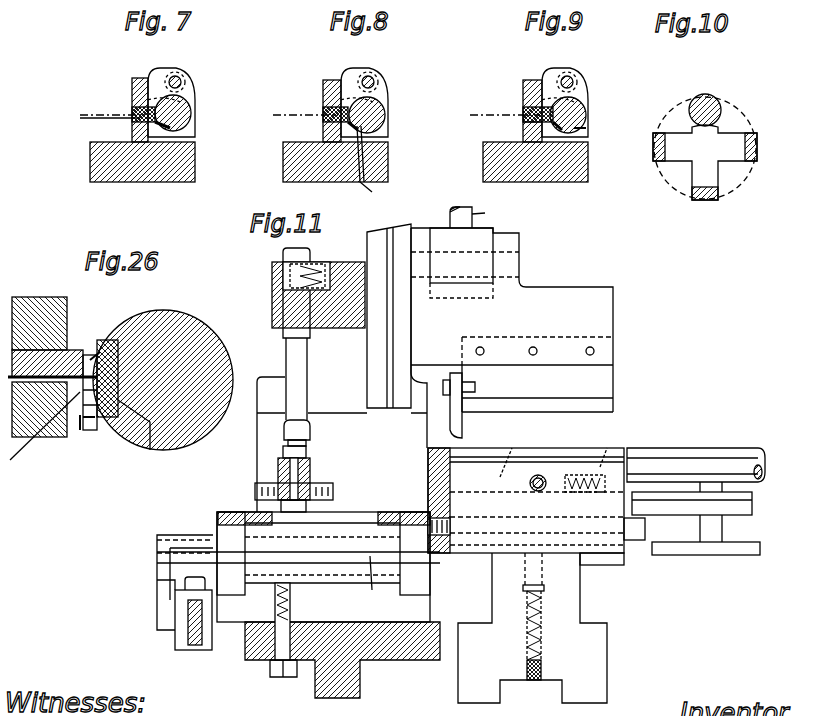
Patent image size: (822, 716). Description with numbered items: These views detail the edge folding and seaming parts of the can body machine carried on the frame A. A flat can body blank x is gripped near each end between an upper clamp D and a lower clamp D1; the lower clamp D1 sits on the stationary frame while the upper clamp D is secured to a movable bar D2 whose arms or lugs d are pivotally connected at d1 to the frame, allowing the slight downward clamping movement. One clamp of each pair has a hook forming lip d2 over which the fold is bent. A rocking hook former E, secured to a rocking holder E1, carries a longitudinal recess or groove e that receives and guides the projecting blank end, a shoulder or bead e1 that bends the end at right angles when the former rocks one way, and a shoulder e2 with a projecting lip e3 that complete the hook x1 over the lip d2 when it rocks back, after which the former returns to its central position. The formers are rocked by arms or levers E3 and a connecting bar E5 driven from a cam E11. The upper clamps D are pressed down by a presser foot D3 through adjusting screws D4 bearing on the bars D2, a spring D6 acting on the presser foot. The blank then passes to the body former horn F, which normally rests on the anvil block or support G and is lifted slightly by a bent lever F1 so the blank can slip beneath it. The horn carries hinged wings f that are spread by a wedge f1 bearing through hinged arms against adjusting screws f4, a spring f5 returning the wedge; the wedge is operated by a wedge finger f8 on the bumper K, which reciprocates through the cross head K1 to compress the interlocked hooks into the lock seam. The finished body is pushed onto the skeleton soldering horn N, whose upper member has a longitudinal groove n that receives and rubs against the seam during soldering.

In FIG. 7, the upper clamp D is at (132, 110).
In FIG. 8, the upper clamp D is at (323, 84).
In FIG. 9, the upper clamp D is at (523, 110).
In FIG. 26, the upper clamp D is at (62, 362).
In FIG. 11, the upper clamp D is at (302, 552).
In FIG. 7, the movable bar D2 is at (132, 86).
In FIG. 11, the movable bar D2 is at (335, 524).
In FIG. 7, the lower clamp D1 is at (97, 118).
In FIG. 9, the lower clamp D1 is at (523, 120).
In FIG. 26, the lower clamp D1 is at (62, 400).
In FIG. 11, the lower clamp D1 is at (372, 586).
In FIG. 7, the arms or lugs d is at (158, 72).
In FIG. 8, the arms or lugs d is at (364, 102).
In FIG. 9, the arms or lugs d is at (545, 78).
In FIG. 11, the arms or lugs d is at (258, 514).
In FIG. 7, the pivot d1 is at (180, 78).
In FIG. 8, the pivot d1 is at (374, 78).
In FIG. 9, the pivot d1 is at (573, 78).
In FIG. 8, the hook forming lip d2 is at (345, 80).
In FIG. 9, the hook forming lip d2 is at (538, 114).
In FIG. 26, the hook forming lip d2 is at (45, 437).
In FIG. 7, the rocking hook former E is at (172, 127).
In FIG. 8, the rocking hook former E is at (372, 192).
In FIG. 9, the rocking hook former E is at (575, 133).
In FIG. 26, the rocking hook former E is at (150, 432).
In FIG. 7, the rocking holder E1 is at (192, 103).
In FIG. 8, the rocking holder E1 is at (386, 105).
In FIG. 9, the rocking holder E1 is at (568, 115).
In FIG. 26, the rocking holder E1 is at (185, 316).
In FIG. 8, the cam E11 is at (386, 127).
In FIG. 9, the cam E11 is at (584, 110).
In FIG. 7, the can body blank x is at (135, 130).
In FIG. 9, the can body blank x is at (523, 122).
In FIG. 26, the can body blank x is at (32, 330).
In FIG. 8, the upturned hook x1 is at (323, 130).
In FIG. 10, the longitudinal groove n is at (706, 92).
In FIG. 10, the soldering horn N is at (718, 100).
In FIG. 11, the soldering horn N is at (668, 452).
In FIG. 26, the longitudinal recess or groove e is at (72, 405).
In FIG. 26, the projecting shoulder or bead e1 is at (92, 358).
In FIG. 26, the shoulder or bead e2 is at (84, 420).
In FIG. 26, the projecting lip e3 is at (80, 432).
In FIG. 11, the presser foot D3 is at (312, 470).
In FIG. 11, the adjusting screws D4 is at (311, 432).
In FIG. 11, the spring D6 is at (332, 262).
In FIG. 11, the bumper K is at (606, 396).
In FIG. 11, the reciprocating slide or cross head K1 is at (378, 346).
In FIG. 11, the body former horn F is at (546, 462).
In FIG. 11, the bent lever F1 is at (430, 476).
In FIG. 11, the movable segments or wings f is at (500, 480).
In FIG. 11, the wedge f1 is at (560, 443).
In FIG. 11, the adjusting screws f4 is at (542, 490).
In FIG. 11, the spring f5 is at (596, 452).
In FIG. 11, the wedge finger or projection f8 is at (463, 434).
In FIG. 11, the anvil block or support G is at (582, 584).
In FIG. 11, the frame A is at (362, 672).
In FIG. 11, the connecting bar E5 is at (196, 648).
In FIG. 11, the arms or levers E3 is at (158, 585).